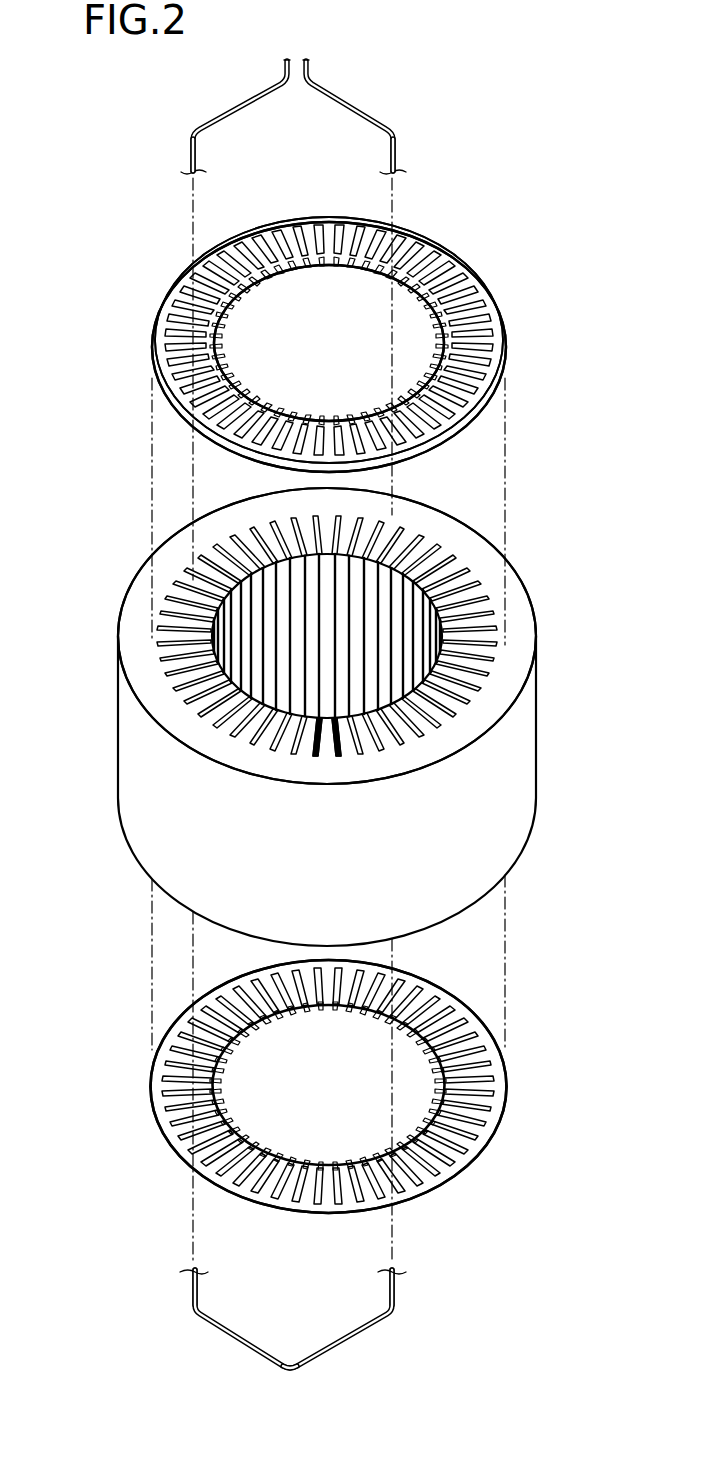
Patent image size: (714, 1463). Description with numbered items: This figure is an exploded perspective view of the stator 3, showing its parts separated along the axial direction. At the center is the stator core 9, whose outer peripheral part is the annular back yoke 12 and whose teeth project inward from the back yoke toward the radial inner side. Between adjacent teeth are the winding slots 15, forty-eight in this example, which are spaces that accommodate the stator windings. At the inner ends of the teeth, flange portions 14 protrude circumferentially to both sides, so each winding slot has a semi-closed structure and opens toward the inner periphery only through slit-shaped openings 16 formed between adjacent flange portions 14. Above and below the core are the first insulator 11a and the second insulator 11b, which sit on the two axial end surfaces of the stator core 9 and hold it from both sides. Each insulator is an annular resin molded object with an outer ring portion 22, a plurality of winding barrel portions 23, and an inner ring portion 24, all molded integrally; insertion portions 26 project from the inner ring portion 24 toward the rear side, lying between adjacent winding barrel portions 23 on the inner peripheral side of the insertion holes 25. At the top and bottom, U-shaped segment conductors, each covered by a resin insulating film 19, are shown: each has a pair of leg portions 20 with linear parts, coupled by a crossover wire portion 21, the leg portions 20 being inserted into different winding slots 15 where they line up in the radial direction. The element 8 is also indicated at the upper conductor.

The stator 3 is at (80, 126).
The first coil segment 8 is at (406, 131).
The stator core 9 is at (118, 703).
The first insulator 11a is at (149, 326).
The second insulator 11b is at (149, 1080).
The back yoke 12 is at (514, 622).
The flange portions 14 is at (430, 578).
The winding slots 15 is at (266, 527).
The slit-shaped openings 16 is at (326, 695).
The insulating film 19 is at (222, 1328).
The leg portions 20 is at (235, 110).
The crossover wire portion 21 is at (336, 1358).
The outer ring portion 22 is at (188, 289).
The winding barrel portions 23 is at (440, 258).
The inner ring portion 24 is at (213, 342).
The insertion holes 25 is at (290, 234).
The insertion portions 26 is at (278, 272).